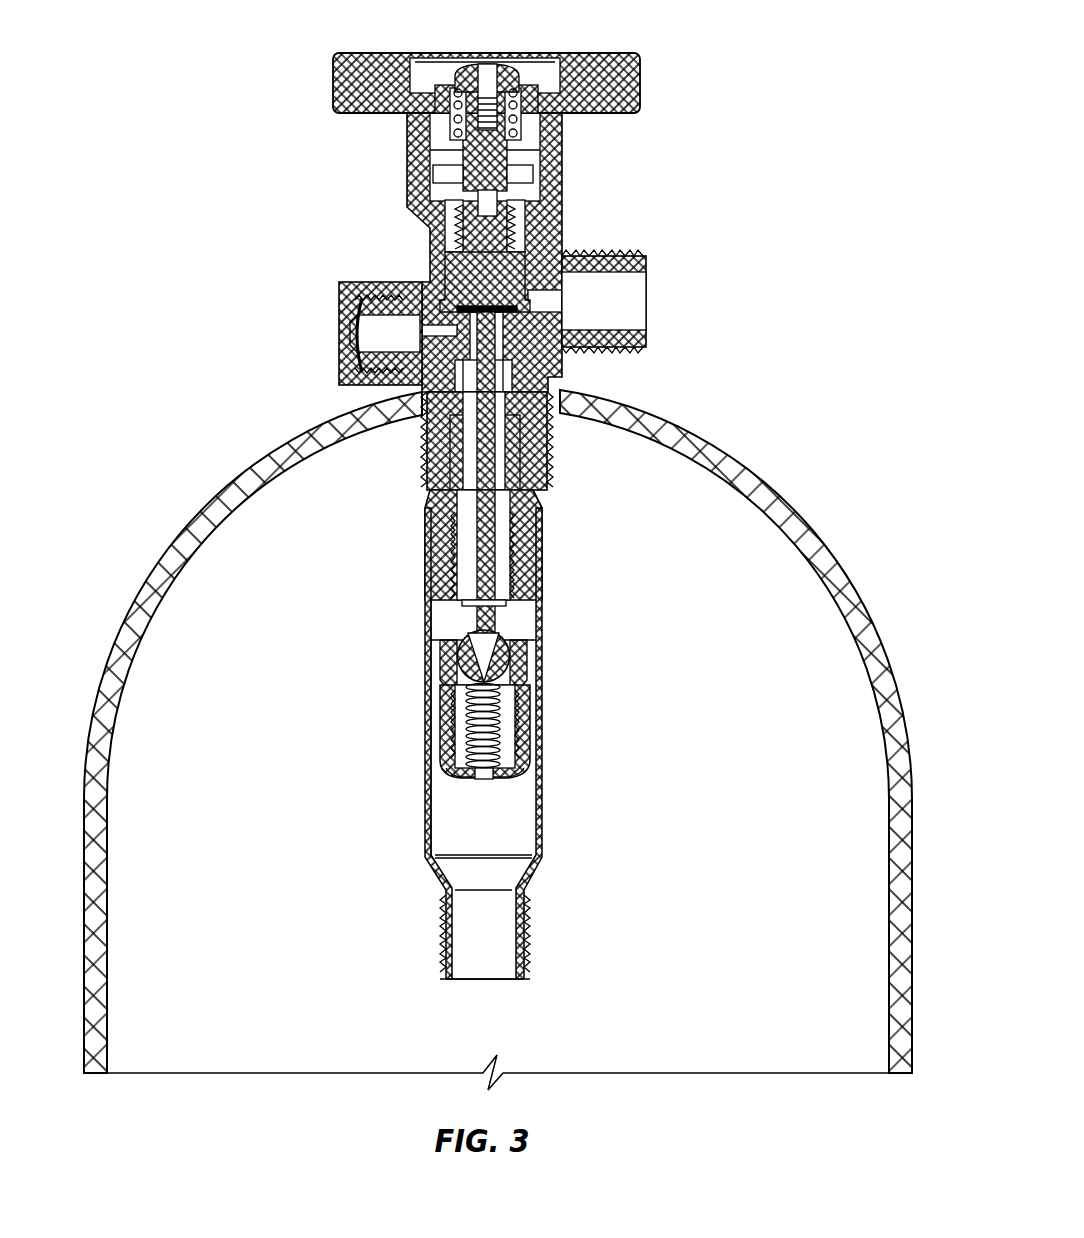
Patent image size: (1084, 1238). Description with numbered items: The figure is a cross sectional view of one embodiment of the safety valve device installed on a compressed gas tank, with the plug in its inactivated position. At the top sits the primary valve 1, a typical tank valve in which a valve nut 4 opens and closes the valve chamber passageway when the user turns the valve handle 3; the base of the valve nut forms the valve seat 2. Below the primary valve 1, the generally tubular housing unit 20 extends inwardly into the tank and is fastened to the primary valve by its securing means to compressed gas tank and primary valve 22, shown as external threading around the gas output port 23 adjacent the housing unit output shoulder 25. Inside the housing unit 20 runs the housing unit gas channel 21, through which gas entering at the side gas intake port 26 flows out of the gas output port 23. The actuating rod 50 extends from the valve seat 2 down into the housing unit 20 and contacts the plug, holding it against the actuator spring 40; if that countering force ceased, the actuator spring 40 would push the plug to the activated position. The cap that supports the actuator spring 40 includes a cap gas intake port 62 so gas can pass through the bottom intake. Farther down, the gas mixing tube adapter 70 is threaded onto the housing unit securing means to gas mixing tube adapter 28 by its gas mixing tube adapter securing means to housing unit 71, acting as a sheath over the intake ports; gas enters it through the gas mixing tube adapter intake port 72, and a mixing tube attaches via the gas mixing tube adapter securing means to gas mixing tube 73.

The primary valve 1 is at (680, 492).
The valve seat 2 is at (481, 300).
The valve handle 3 is at (328, 88).
The valve nut 4 is at (540, 258).
The housing unit 20 is at (428, 498).
The housing unit gas channel 21 is at (500, 566).
The securing means to compressed gas tank and primary valve 22 is at (520, 458).
The gas output port 23 is at (466, 468).
The housing unit output shoulder 25 is at (550, 500).
The side gas intake port 26 is at (438, 636).
The housing unit securing means to gas mixing tube adapter 28 is at (448, 540).
The actuator spring 40 is at (502, 718).
The actuating rod 50 is at (468, 621).
The cap gas intake port 62 is at (483, 782).
The gas mixing tube adapter 70 is at (423, 771).
The gas mixing tube adapter securing means to housing unit 71 is at (424, 596).
The gas mixing tube adapter intake port 72 is at (482, 990).
The gas mixing tube adapter securing means to gas mixing tube 73 is at (438, 945).